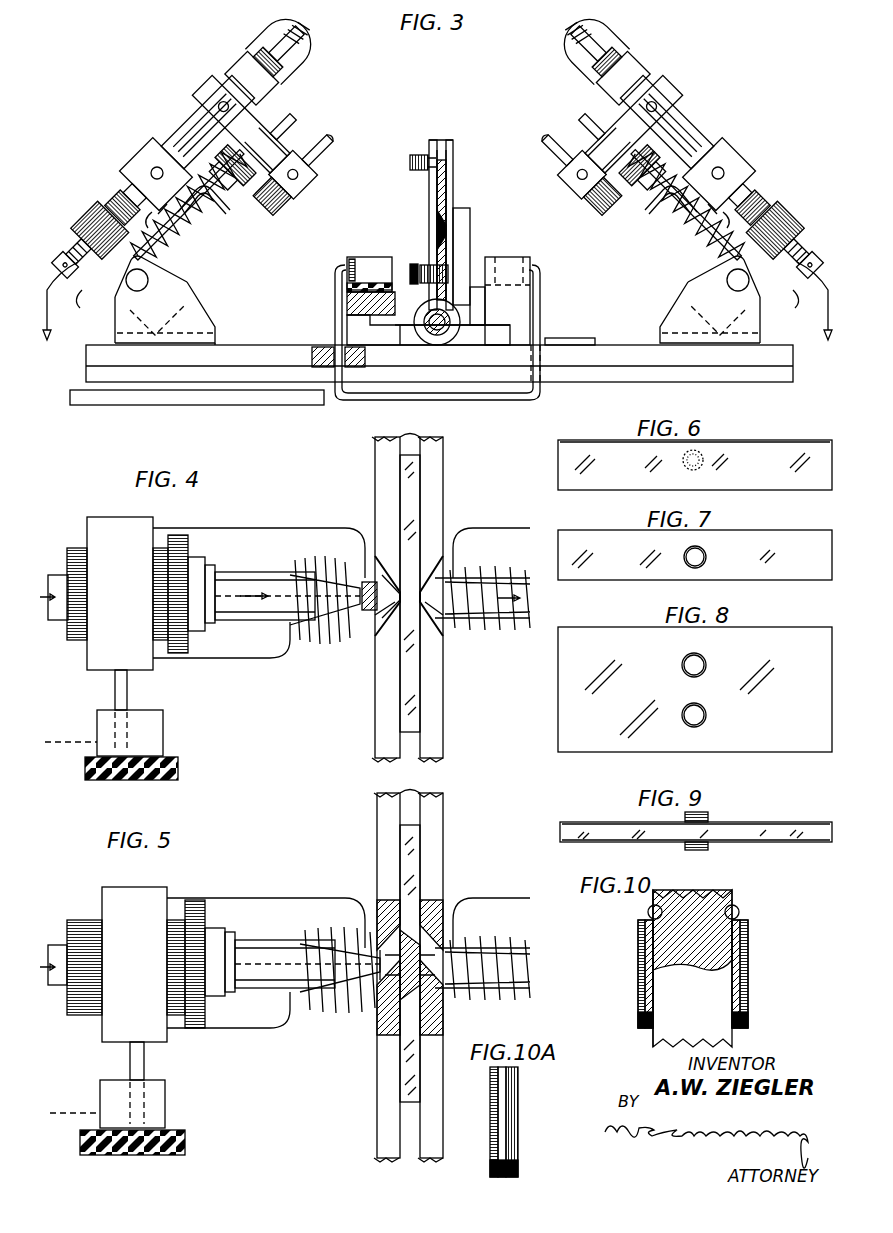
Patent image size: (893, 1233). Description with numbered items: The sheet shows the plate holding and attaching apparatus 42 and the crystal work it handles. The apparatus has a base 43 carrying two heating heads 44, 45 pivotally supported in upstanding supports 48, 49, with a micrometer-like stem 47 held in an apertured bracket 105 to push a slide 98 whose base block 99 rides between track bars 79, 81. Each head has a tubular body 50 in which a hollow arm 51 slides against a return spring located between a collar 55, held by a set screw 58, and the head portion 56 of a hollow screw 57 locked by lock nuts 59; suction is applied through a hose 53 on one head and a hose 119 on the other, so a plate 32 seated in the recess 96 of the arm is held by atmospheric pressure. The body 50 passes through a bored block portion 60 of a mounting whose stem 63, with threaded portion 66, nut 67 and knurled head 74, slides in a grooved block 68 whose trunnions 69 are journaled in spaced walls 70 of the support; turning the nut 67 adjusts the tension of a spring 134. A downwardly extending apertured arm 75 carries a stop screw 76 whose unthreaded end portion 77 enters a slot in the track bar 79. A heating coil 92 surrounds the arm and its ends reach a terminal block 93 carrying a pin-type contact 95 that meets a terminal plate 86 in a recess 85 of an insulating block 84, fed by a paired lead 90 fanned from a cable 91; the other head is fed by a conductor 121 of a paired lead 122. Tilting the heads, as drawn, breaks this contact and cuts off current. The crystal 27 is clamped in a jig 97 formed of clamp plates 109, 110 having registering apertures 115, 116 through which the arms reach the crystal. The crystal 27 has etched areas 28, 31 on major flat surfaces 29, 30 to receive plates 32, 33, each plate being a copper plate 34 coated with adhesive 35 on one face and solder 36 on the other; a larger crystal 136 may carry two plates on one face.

In FIG. 3, the crystal 27 is at (448, 182).
In FIG. 4, the crystal 27 is at (410, 480).
In FIG. 5, the crystal 27 is at (410, 963).
In FIG. 6, the crystal 27 is at (795, 446).
In FIG. 9, the crystal 27 is at (560, 825).
In FIG. 10, the crystal 27 is at (655, 1046).
In FIG. 6, the etched area 28 is at (686, 468).
In FIG. 10, the etched area 28 is at (670, 906).
In FIG. 6, the major flat surface 29 is at (600, 448).
In FIG. 9, the major flat surface 29 is at (777, 822).
In FIG. 10, the major flat surface 29 is at (652, 906).
In FIG. 9, the opposite major flat surface 30 is at (778, 842).
In FIG. 10, the opposite major flat surface 30 is at (736, 900).
In FIG. 10, the etched area 31 is at (718, 906).
In FIG. 4, the plate 32 is at (393, 578).
In FIG. 5, the plate 32 is at (382, 942).
In FIG. 7, the plate 32 is at (688, 564).
In FIG. 9, the plate 32 is at (706, 816).
In FIG. 10, the plate 32 is at (640, 931).
In FIG. 10A, the plate 32 is at (490, 1165).
In FIG. 4, the plate 33 is at (450, 578).
In FIG. 5, the plate 33 is at (445, 915).
In FIG. 9, the plate 33 is at (706, 848).
In FIG. 10, the plate 33 is at (750, 948).
In FIG. 10, the plate of copper 34 is at (640, 1022).
In FIG. 10A, the plate of copper 34 is at (510, 1118).
In FIG. 10, the adhesive 35 is at (646, 948).
In FIG. 10A, the adhesive 35 is at (504, 1101).
In FIG. 10, the solder 36 is at (640, 1008).
In FIG. 10A, the solder 36 is at (496, 1088).
In FIG. 3, the plate holding and attaching apparatus 42 is at (568, 336).
In FIG. 3, the base 43 is at (793, 354).
In FIG. 3, the heating head 44 is at (180, 132).
In FIG. 3, the heating head 45 is at (680, 110).
In FIG. 3, the micrometer-like stem 47 is at (460, 328).
In FIG. 3, the support 48 is at (217, 343).
In FIG. 3, the support 49 is at (660, 342).
In FIG. 3, the tubular body 50 is at (205, 120).
In FIG. 3, the hollow arm 51 is at (290, 47).
In FIG. 4, the hollow arm 51 is at (252, 582).
In FIG. 5, the hollow arm 51 is at (255, 952).
In FIG. 3, the hose 53 is at (60, 262).
In FIG. 3, the collar 55 is at (78, 308).
In FIG. 3, the head portion 56 is at (100, 207).
In FIG. 3, the hollow screw 57 is at (118, 190).
In FIG. 3, the set screw 58 is at (80, 222).
In FIG. 3, the lock nuts 59 is at (154, 213).
In FIG. 3, the bored block portion 60 is at (148, 160).
In FIG. 3, the stem 63 is at (190, 236).
In FIG. 3, the threaded portion 66 is at (235, 172).
In FIG. 3, the nut 67 is at (212, 188).
In FIG. 3, the grooved block 68 is at (172, 270).
In FIG. 3, the trunnions 69 is at (137, 291).
In FIG. 3, the apertured spaced walls 70 is at (182, 304).
In FIG. 3, the knurled head 74 is at (245, 155).
In FIG. 3, the apertured arm 75 is at (212, 96).
In FIG. 3, the stop screw 76 is at (278, 212).
In FIG. 3, the unthreaded end portion 77 is at (320, 153).
In FIG. 3, the track bar 79 is at (355, 325).
In FIG. 3, the track bar 81 is at (525, 302).
In FIG. 3, the insulating block 84 is at (385, 262).
In FIG. 4, the insulating block 84 is at (164, 722).
In FIG. 3, the recess 85 is at (355, 263).
In FIG. 3, the terminal plate 86 is at (372, 284).
In FIG. 4, the terminal plate 86 is at (150, 752).
In FIG. 5, the terminal plate 86 is at (155, 1124).
In FIG. 3, the paired lead 90 is at (338, 401).
In FIG. 3, the cable 91 is at (128, 398).
In FIG. 3, the heating coil 92 is at (300, 33).
In FIG. 4, the heating coil 92 is at (315, 574).
In FIG. 5, the heating coil 92 is at (316, 946).
In FIG. 3, the terminal block 93 is at (250, 60).
In FIG. 4, the terminal block 93 is at (95, 524).
In FIG. 5, the terminal block 93 is at (112, 895).
In FIG. 3, the pin-type contact 95 is at (286, 112).
In FIG. 4, the pin-type contact 95 is at (128, 692).
In FIG. 5, the pin-type contact 95 is at (145, 1064).
In FIG. 4, the recess 96 is at (366, 622).
In FIG. 3, the jig 97 is at (440, 140).
In FIG. 4, the jig 97 is at (425, 438).
In FIG. 5, the jig 97 is at (425, 792).
In FIG. 3, the slide 98 is at (461, 280).
In FIG. 3, the base block 99 is at (478, 300).
In FIG. 3, the apertured bracket 105 is at (377, 340).
In FIG. 3, the clamp plate 109 is at (432, 140).
In FIG. 4, the clamp plate 109 is at (380, 465).
In FIG. 5, the clamp plate 109 is at (382, 820).
In FIG. 3, the clamp plate 110 is at (450, 141).
In FIG. 4, the clamp plate 110 is at (438, 500).
In FIG. 5, the clamp plate 110 is at (440, 824).
In FIG. 4, the aperture 115 is at (390, 622).
In FIG. 5, the aperture 115 is at (380, 1000).
In FIG. 4, the aperture 116 is at (432, 620).
In FIG. 5, the aperture 116 is at (445, 1000).
In FIG. 3, the hose 119 is at (829, 276).
In FIG. 3, the conductor 121 is at (541, 272).
In FIG. 3, the paired lead 122 is at (508, 404).
In FIG. 3, the spring 134 is at (200, 222).
In FIG. 8, the crystal 136 is at (765, 627).